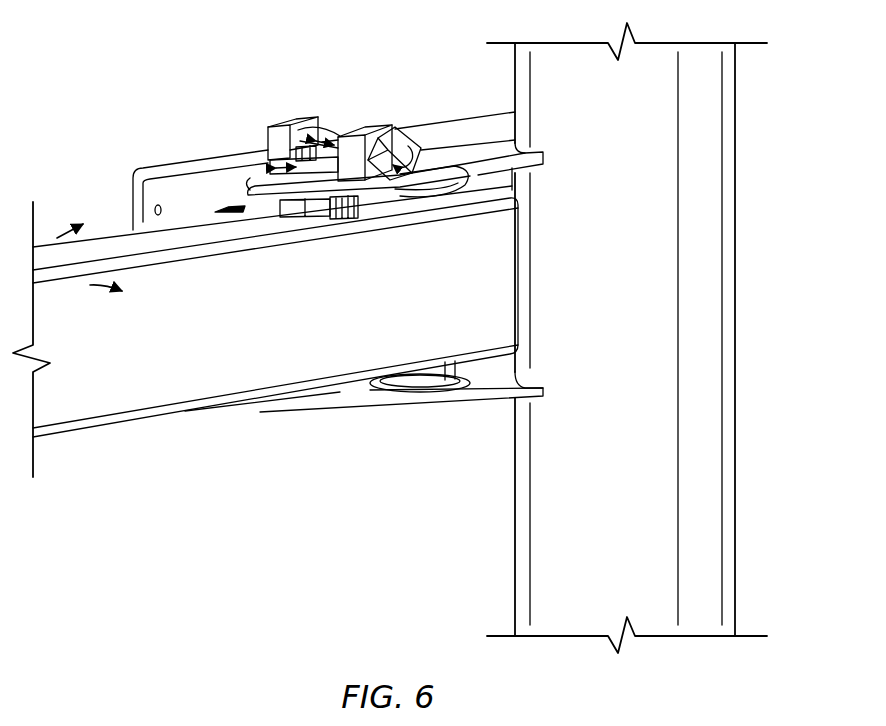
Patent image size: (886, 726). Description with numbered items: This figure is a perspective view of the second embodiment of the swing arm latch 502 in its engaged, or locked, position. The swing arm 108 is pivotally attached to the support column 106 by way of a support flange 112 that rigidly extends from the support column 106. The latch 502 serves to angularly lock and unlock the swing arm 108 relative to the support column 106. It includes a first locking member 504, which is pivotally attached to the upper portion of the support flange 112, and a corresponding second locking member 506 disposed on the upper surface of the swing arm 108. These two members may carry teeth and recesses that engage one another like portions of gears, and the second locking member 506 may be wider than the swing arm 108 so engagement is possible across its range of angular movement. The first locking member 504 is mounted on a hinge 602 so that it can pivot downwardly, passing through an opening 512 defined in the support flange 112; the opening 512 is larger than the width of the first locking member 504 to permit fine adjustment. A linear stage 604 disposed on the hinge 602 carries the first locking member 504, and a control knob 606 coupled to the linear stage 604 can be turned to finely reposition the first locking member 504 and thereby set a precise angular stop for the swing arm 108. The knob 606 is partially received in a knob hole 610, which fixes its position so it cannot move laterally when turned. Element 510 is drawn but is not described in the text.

The support column 106 is at (737, 107).
The swing arm 108 is at (63, 438).
The support flange 112 is at (527, 153).
The swing arm latch 502 is at (318, 167).
The first locking member 504 is at (252, 150).
The second locking member 506 is at (360, 214).
The wedge bar 510 is at (425, 130).
The opening 512 is at (258, 158).
The hinge 602 is at (292, 122).
The linear stage 604 is at (328, 130).
The control knob 606 is at (412, 162).
The knob hole 610 is at (437, 176).